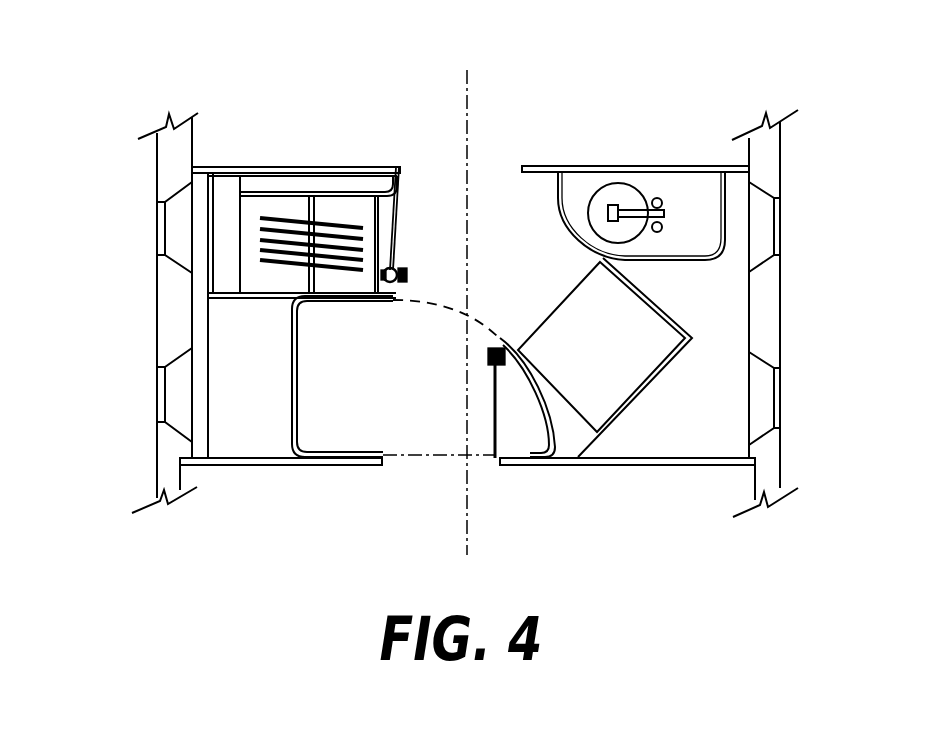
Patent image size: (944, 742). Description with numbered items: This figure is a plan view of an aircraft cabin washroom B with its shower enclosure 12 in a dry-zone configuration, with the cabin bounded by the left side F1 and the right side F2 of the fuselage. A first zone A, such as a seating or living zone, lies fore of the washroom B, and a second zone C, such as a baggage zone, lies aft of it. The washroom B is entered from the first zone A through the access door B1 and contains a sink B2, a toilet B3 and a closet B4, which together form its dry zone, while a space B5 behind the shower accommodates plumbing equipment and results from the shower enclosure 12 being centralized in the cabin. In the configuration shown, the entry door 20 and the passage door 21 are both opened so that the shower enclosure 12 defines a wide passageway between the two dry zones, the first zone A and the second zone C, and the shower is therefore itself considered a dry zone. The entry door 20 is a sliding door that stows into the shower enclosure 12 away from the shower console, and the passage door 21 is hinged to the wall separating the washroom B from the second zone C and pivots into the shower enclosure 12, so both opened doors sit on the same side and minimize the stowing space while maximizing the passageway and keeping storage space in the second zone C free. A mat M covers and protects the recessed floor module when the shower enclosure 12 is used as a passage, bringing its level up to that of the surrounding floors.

The shower enclosure 12 is at (327, 422).
The entry door 20 is at (533, 390).
The passage door 21 is at (495, 375).
The first zone A is at (588, 124).
The washroom B is at (545, 270).
The access door B1 is at (397, 215).
The sink B2 is at (692, 195).
The toilet B3 is at (583, 352).
The closet B4 is at (263, 205).
The space B5 is at (230, 384).
The second zone C is at (343, 517).
The left side F1 is at (160, 301).
The right side F2 is at (773, 304).
The mat M is at (368, 425).